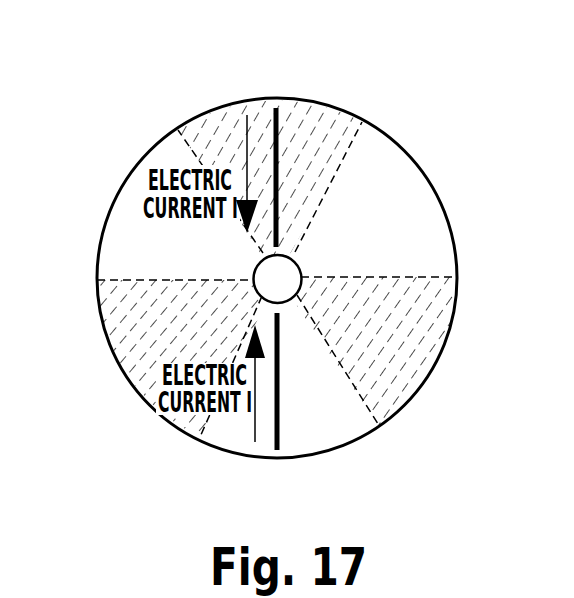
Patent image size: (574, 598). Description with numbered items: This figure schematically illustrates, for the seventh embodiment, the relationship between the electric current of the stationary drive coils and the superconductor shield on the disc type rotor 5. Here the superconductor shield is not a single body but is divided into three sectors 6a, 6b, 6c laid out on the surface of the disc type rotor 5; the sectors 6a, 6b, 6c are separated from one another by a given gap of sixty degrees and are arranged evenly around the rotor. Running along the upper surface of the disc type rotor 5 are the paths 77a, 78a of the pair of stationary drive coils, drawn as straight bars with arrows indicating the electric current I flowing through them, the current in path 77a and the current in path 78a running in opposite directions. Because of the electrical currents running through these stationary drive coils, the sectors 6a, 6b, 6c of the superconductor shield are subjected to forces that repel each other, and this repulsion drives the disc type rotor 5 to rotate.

The disc type rotor 5 is at (133, 227).
The sector of superconductor shield 6a is at (145, 358).
The sector of superconductor shield 6b is at (306, 107).
The sector of superconductor shield 6c is at (415, 348).
The path of stationary drive coil 77a is at (290, 182).
The path of stationary drive coil 78a is at (288, 403).